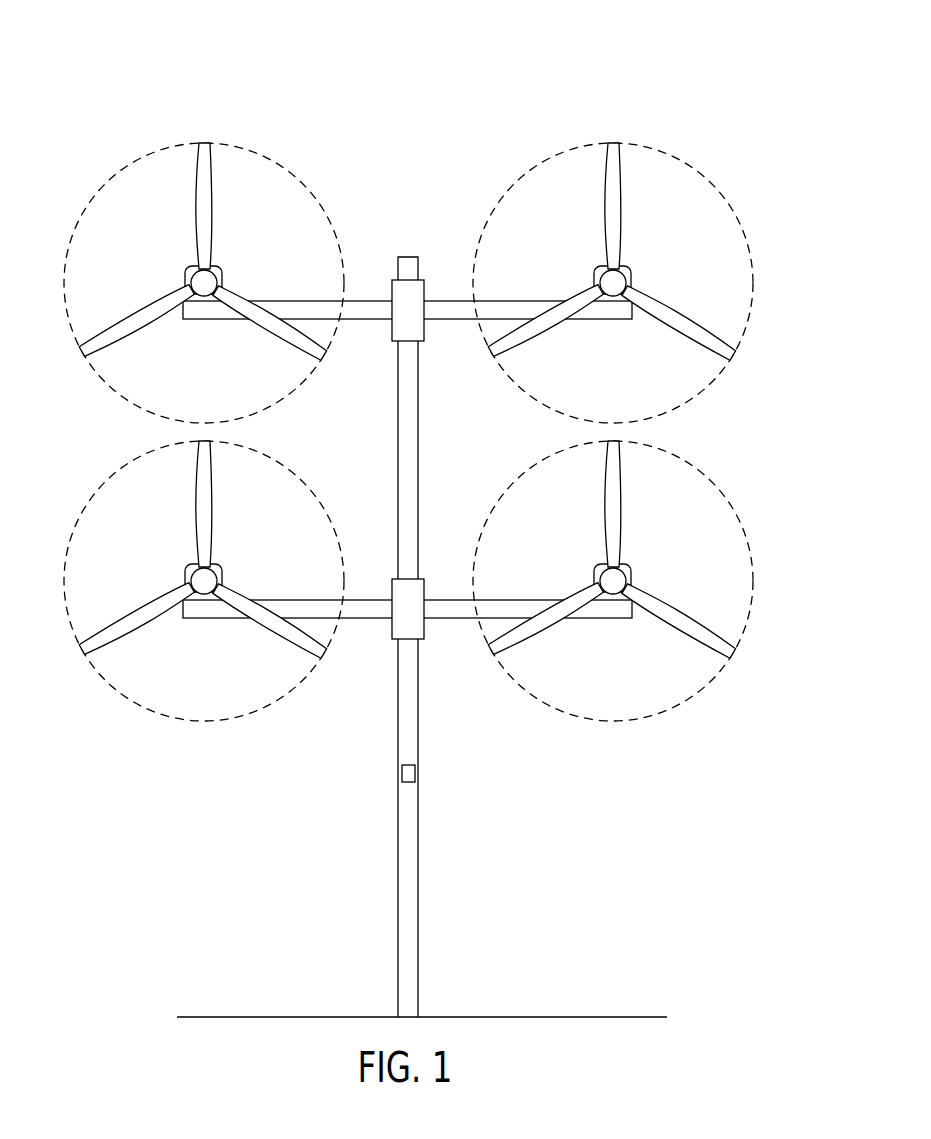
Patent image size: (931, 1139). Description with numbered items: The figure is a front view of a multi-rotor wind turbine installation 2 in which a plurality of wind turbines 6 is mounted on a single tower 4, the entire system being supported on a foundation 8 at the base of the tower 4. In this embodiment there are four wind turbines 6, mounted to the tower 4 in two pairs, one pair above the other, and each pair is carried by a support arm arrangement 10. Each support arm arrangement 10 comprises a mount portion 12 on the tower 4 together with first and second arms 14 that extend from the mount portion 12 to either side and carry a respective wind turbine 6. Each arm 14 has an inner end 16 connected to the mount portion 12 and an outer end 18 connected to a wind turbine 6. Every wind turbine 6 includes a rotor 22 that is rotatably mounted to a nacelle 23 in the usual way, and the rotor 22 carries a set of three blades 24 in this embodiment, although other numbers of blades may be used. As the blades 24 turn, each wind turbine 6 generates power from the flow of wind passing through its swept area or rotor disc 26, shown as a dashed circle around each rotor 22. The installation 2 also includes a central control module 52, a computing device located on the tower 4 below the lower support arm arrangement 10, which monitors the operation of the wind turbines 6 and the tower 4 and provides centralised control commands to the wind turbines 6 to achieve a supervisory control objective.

The wind turbine installation 2 is at (685, 71).
The tower 4 is at (420, 470).
The wind turbine 6 is at (419, 439).
The foundation 8 is at (607, 1017).
The support arm arrangement 10 is at (407, 440).
The mount portion 12 is at (397, 341).
The arm 14 is at (380, 301).
The inner end 16 is at (447, 287).
The outer end 18 is at (614, 345).
The rotor 22 is at (219, 281).
The nacelle 23 is at (183, 277).
The blade 24 is at (110, 340).
The rotor disc 26 is at (288, 173).
The central control module 52 is at (438, 773).